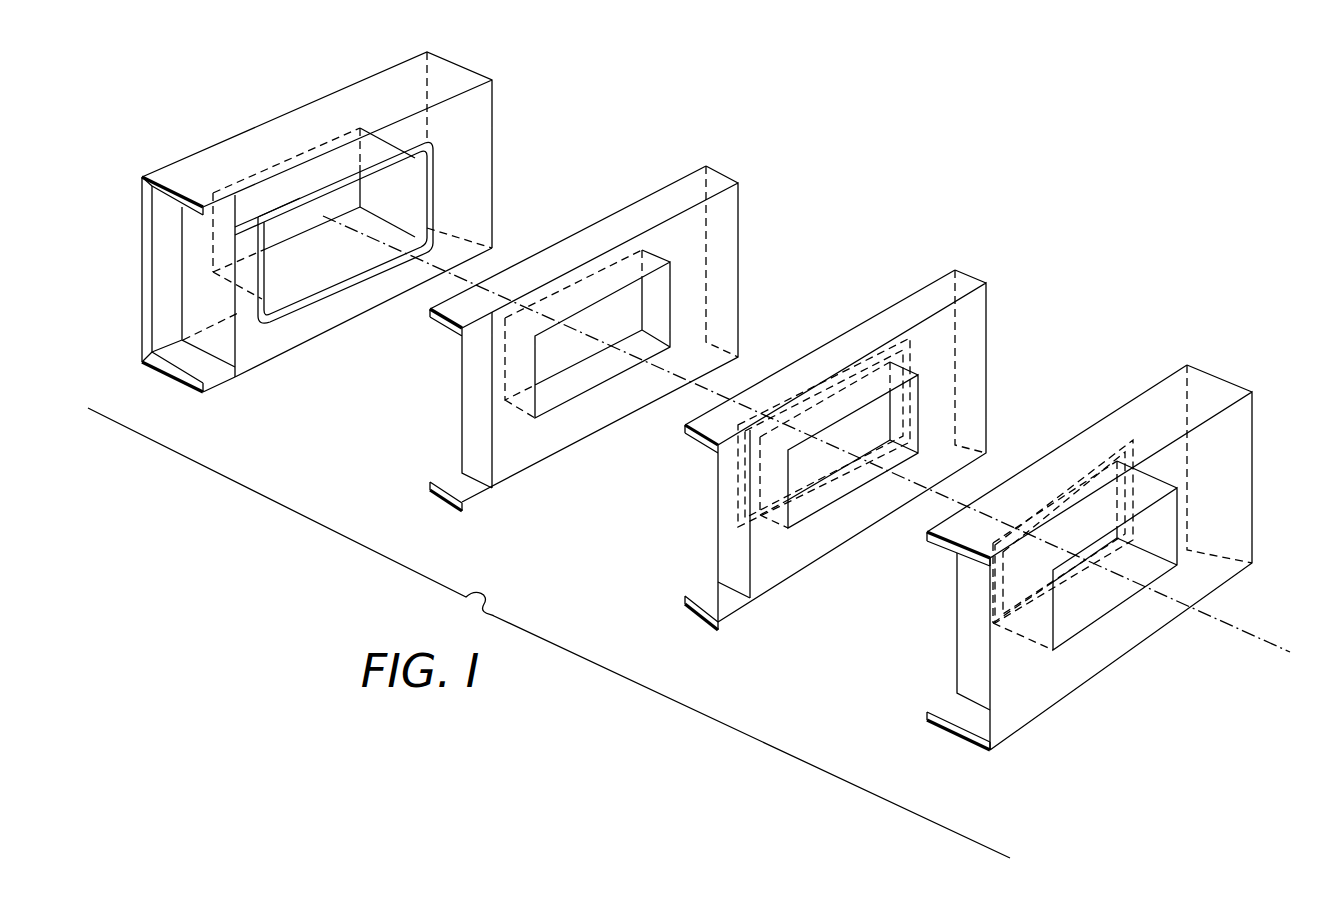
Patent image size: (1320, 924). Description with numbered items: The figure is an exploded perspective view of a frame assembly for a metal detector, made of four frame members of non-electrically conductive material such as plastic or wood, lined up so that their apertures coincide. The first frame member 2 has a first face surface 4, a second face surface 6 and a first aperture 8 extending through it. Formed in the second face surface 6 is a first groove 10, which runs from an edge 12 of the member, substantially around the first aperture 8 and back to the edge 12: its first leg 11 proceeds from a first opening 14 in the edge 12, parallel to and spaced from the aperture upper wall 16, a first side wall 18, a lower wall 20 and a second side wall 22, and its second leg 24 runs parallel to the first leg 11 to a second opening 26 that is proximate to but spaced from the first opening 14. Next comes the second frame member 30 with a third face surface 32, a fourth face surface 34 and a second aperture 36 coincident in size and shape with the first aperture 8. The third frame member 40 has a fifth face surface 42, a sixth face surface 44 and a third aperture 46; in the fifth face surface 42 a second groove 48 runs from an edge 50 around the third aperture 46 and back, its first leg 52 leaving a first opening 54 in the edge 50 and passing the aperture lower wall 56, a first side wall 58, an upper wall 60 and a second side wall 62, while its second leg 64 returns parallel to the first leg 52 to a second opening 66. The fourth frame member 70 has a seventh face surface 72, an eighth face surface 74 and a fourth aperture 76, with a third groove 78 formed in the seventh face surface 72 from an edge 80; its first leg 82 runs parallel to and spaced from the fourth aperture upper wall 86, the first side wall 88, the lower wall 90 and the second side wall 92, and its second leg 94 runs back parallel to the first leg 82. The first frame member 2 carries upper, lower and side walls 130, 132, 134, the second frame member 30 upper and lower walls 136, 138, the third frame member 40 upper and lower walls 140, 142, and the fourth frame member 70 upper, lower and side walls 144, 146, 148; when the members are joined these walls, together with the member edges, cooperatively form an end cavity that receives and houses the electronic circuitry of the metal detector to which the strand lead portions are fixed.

The first frame member 2 is at (258, 127).
The first face surface 4 is at (304, 96).
The second face surface 6 is at (262, 348).
The first aperture 8 is at (338, 270).
The first groove 10 is at (368, 280).
The first leg 11 is at (256, 214).
The edge 12 is at (224, 337).
The first opening 14 is at (214, 228).
The aperture upper wall 16 is at (403, 176).
The first side wall 18 is at (404, 207).
The lower wall 20 is at (384, 234).
The second side wall 22 is at (318, 262).
The second leg 24 is at (252, 272).
The second opening 26 is at (240, 243).
The second frame member 30 is at (618, 212).
The third face surface 32 is at (645, 190).
The fourth face surface 34 is at (745, 242).
The second aperture 36 is at (653, 305).
The third frame member 40 is at (818, 344).
The fifth face surface 42 is at (858, 310).
The sixth face surface 44 is at (977, 345).
The third aperture 46 is at (903, 426).
The second groove 48 is at (805, 508).
The edge 50 is at (738, 573).
The first leg 52 is at (727, 567).
The first opening 54 is at (722, 561).
The aperture lower wall 56 is at (843, 490).
The first side wall 58 is at (905, 396).
The upper wall 60 is at (850, 416).
The second side wall 62 is at (793, 466).
The second leg 64 is at (724, 517).
The second opening 66 is at (722, 538).
The fourth frame member 70 is at (1134, 394).
The seventh face surface 72 is at (1063, 435).
The eighth face surface 74 is at (1240, 474).
The fourth aperture 76 is at (1173, 542).
The third groove 78 is at (1065, 592).
The edge 80 is at (956, 628).
The first leg 82 is at (965, 532).
The fourth aperture upper wall 86 is at (1160, 508).
The first side wall 88 is at (1174, 551).
The lower wall 90 is at (1110, 587).
The second side wall 92 is at (1068, 621).
The second leg 94 is at (967, 572).
The upper wall 130 is at (163, 193).
The lower wall 132 is at (162, 377).
The side wall 134 is at (146, 308).
The upper wall 136 is at (437, 320).
The lower wall 138 is at (455, 485).
The upper wall 140 is at (698, 436).
The lower wall 142 is at (727, 600).
The upper wall 144 is at (948, 547).
The lower wall 146 is at (956, 712).
The side wall 148 is at (982, 713).